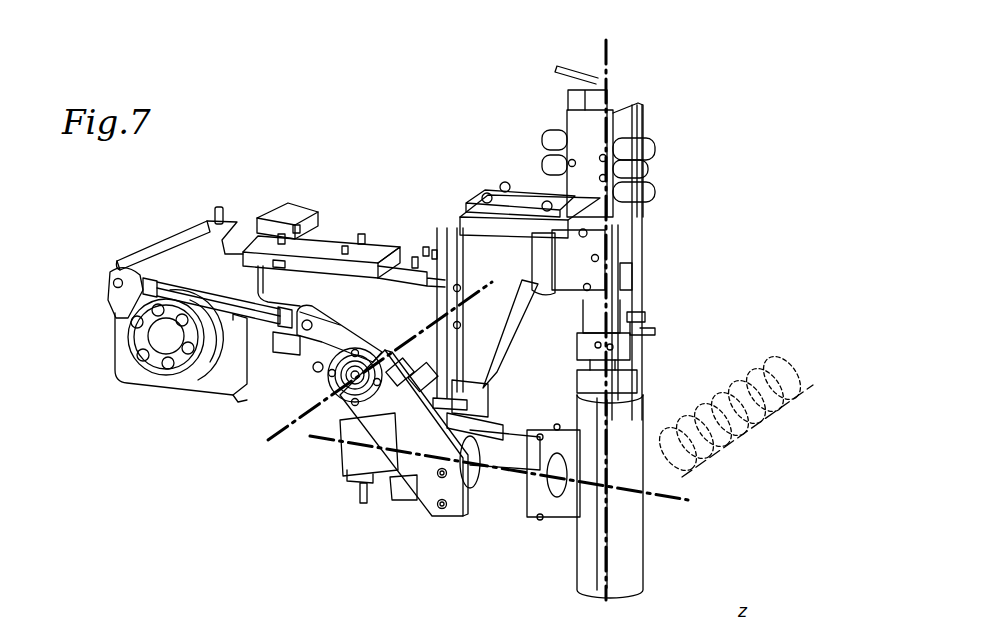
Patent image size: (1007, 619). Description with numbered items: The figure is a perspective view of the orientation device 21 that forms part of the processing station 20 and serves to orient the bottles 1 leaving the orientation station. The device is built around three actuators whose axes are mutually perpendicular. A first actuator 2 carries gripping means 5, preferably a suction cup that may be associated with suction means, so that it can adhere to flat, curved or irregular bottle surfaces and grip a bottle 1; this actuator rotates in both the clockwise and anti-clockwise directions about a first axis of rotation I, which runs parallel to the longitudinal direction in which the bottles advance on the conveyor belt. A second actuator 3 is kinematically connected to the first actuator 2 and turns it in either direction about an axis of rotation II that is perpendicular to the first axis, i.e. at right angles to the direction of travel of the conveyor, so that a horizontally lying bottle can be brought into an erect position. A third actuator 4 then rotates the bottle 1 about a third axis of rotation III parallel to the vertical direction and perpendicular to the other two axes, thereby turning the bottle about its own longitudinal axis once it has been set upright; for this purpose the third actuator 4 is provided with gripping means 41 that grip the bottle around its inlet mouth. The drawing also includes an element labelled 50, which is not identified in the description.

The orientation device 21 is at (256, 158).
The support block 50 is at (364, 302).
The second actuator 3 is at (166, 338).
The first actuator 2 is at (364, 452).
The third actuator 4 is at (625, 280).
The gripping means 41 is at (636, 382).
The bottle 1 is at (633, 532).
The gripping means 5 is at (557, 478).
The processing station 20 is at (748, 434).
The first axis of rotation I is at (285, 428).
The axis of rotation II is at (655, 492).
The third axis of rotation III is at (608, 52).